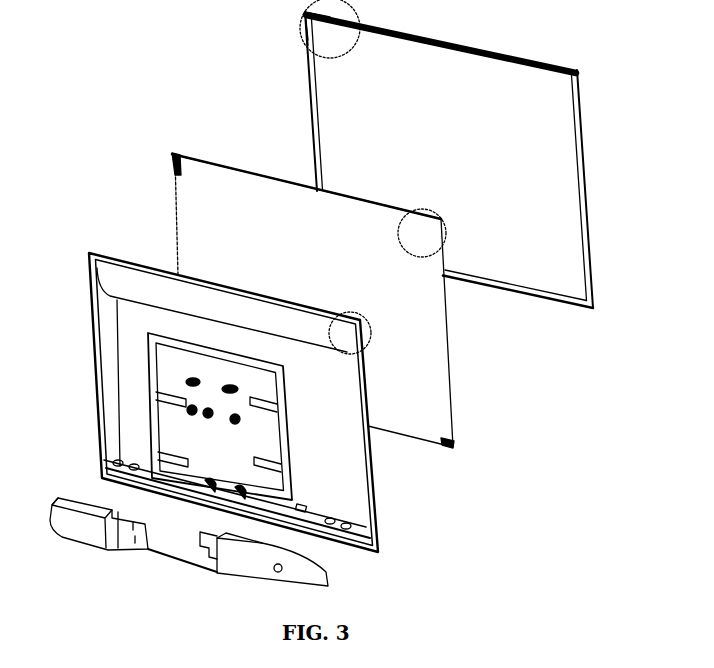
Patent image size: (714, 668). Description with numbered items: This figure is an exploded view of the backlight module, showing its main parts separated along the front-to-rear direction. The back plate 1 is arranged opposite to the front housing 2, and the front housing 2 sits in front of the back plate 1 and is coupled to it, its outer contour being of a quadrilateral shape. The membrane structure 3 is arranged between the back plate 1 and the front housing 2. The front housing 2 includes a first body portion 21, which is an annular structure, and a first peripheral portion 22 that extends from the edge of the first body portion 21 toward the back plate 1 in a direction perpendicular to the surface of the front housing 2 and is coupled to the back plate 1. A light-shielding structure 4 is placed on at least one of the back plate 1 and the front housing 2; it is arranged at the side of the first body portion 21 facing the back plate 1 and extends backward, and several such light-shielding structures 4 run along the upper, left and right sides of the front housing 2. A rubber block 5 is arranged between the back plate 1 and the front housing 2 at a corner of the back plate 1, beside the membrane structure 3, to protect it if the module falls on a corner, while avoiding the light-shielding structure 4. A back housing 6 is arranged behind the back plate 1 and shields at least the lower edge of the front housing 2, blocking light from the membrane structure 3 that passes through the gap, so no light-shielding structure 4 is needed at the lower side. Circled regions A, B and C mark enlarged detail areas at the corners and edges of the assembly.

The back plate 1 is at (118, 336).
The front housing 2 is at (256, 20).
The first body portion 21 is at (302, 14).
The first peripheral portion 22 is at (303, 32).
The membrane structure 3 is at (200, 228).
The light-shielding structure 4 is at (446, 41).
The rubber block 5 is at (170, 156).
The back housing 6 is at (70, 504).
The detail region A is at (356, 7).
The detail region B is at (440, 226).
The detail region C is at (372, 332).